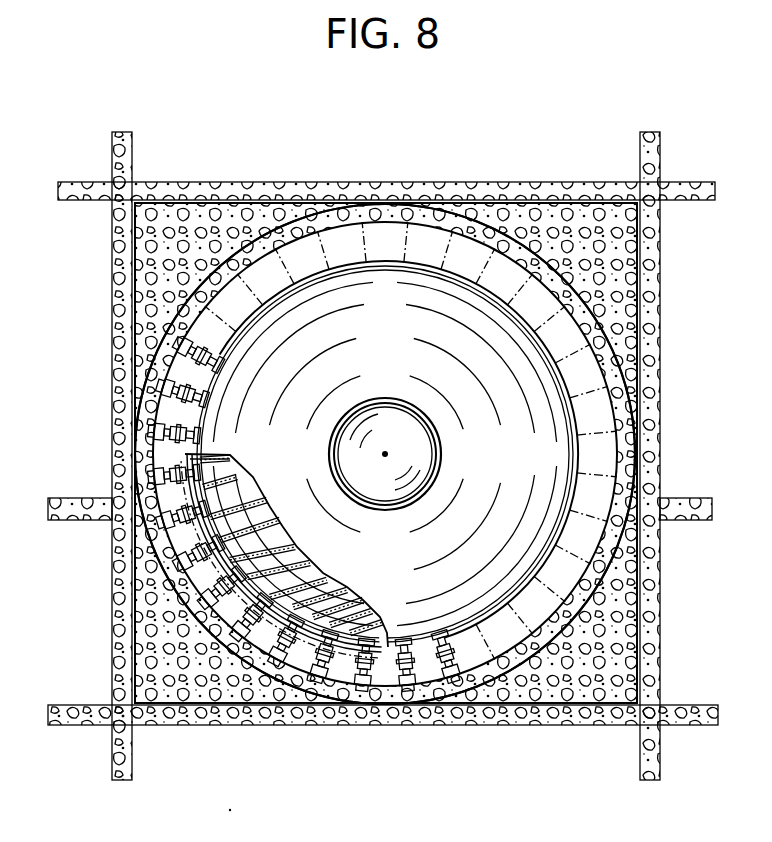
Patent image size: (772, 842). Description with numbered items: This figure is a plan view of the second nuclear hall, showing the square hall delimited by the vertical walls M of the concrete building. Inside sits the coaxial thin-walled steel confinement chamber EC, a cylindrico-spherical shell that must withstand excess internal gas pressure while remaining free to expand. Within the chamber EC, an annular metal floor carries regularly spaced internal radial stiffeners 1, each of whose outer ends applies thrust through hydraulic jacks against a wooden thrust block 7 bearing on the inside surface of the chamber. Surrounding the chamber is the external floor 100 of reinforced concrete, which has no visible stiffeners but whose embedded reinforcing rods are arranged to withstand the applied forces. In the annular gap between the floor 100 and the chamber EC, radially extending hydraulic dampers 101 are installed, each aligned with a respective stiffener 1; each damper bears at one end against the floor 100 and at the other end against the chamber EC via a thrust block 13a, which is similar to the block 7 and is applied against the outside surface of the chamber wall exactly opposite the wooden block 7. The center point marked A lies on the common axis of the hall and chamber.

The internal radial stiffener 1 is at (256, 472).
The thrust block 7 is at (235, 562).
The thrust block 13a is at (192, 549).
The external floor 100 is at (168, 274).
The hydraulic damper 101 is at (150, 462).
The confinement chamber EC is at (322, 303).
The vertical wall M is at (540, 182).
The axis A is at (384, 454).